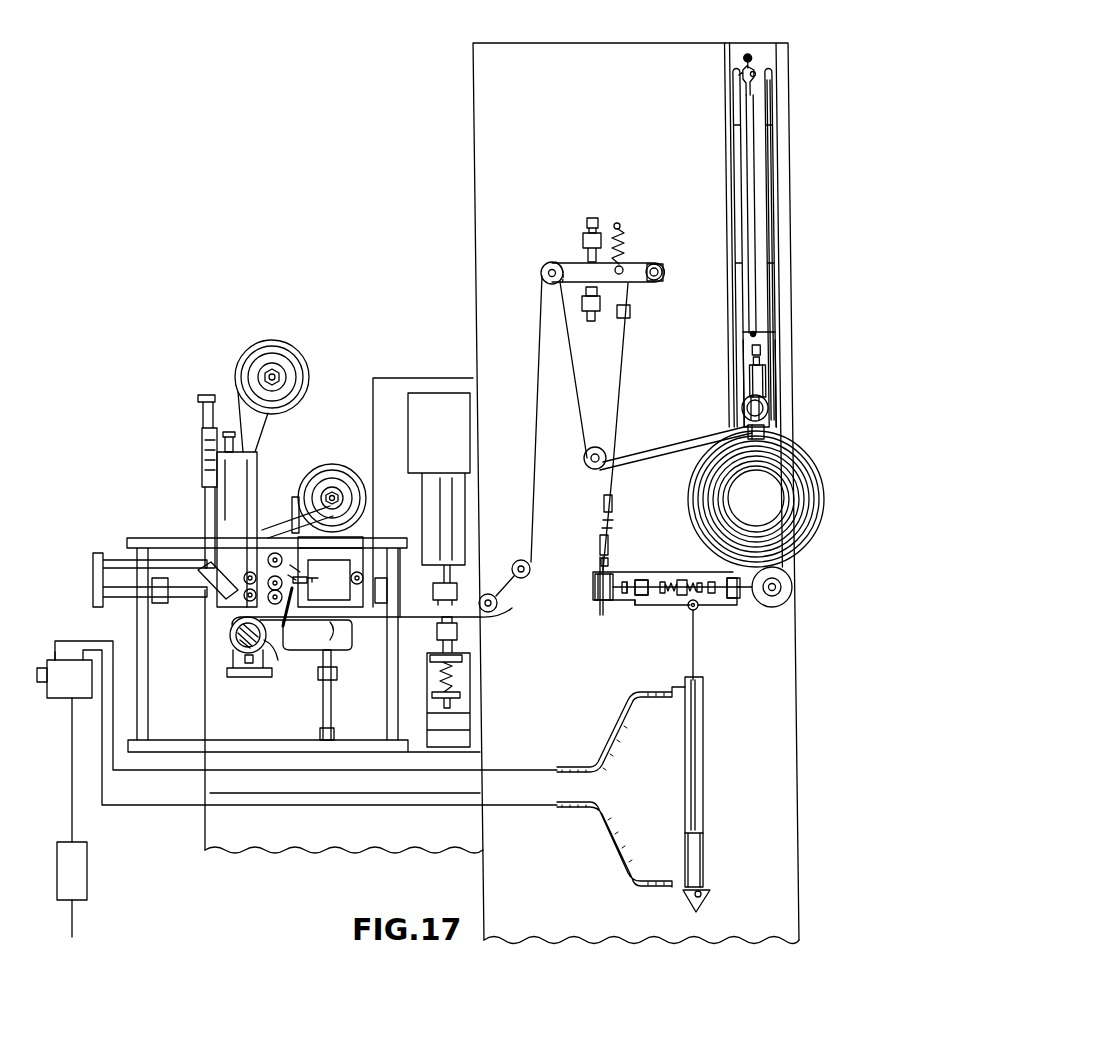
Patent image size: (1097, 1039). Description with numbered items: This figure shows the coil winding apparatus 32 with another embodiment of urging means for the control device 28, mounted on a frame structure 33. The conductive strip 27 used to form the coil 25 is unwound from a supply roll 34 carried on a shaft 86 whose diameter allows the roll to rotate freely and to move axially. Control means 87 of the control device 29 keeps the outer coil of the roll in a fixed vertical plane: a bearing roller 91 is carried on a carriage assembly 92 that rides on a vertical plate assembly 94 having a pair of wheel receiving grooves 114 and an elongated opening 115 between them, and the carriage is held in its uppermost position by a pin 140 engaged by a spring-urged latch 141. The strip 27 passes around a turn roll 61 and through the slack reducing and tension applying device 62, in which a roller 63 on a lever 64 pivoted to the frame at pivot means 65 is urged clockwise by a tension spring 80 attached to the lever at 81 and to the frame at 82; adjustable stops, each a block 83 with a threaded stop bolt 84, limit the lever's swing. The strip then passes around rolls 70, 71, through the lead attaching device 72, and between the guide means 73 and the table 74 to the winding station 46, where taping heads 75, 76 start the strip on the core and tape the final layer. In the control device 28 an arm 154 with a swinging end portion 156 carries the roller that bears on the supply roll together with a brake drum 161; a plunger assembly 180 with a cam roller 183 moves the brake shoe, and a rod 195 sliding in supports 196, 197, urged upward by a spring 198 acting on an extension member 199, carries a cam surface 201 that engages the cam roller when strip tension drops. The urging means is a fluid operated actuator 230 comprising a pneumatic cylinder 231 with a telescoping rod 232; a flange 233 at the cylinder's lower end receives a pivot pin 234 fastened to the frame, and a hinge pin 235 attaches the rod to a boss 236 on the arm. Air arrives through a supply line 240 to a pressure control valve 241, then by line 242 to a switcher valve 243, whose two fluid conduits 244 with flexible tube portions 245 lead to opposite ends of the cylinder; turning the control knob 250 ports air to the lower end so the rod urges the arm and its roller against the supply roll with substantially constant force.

The strip conductor coil construction 25 is at (278, 660).
The strip 27 is at (532, 523).
The control device 28 is at (645, 620).
The control device 29 is at (782, 358).
The coil winding apparatus 32 is at (136, 513).
The frame structure 33 is at (790, 818).
The supply roll 34 is at (808, 522).
The winding station 46 is at (222, 637).
The turn roll 61 is at (598, 450).
The slack reducing and tension applying device 62 is at (540, 270).
The roller 63 is at (552, 290).
The lever 64 is at (645, 283).
The pivot means 65 is at (666, 272).
The roll 70 is at (512, 560).
The roll 71 is at (497, 592).
The lead attaching device 72 is at (428, 622).
The combination guide means and bearing surface means 73 is at (330, 614).
The table 74 is at (342, 633).
The taping head means 75 is at (357, 550).
The taping head means 76 is at (222, 522).
The tension spring 80 is at (625, 241).
The spring attachment point on lever 81 is at (623, 268).
The spring attachment point on frame 82 is at (619, 223).
The block 83 is at (582, 239).
The threaded stop bolt 84 is at (586, 221).
The shaft 86 is at (778, 495).
The control means 87 is at (775, 437).
The bearing roller 91 is at (770, 409).
The carriage assembly 92 is at (773, 365).
The plate assembly 94 is at (771, 160).
The wheel receiving groove means 114 is at (732, 113).
The elongated opening 115 is at (757, 217).
The pin 140 is at (760, 330).
The latch 141 is at (745, 87).
The arm 154 is at (680, 575).
The swinging end portion 156 is at (757, 612).
The brake drum 161 is at (793, 580).
The plunger assembly 180 is at (688, 572).
The cam roller 183 is at (622, 606).
The rod 195 is at (620, 360).
The support 196 is at (631, 311).
The support 197 is at (594, 589).
The spring 198 is at (598, 562).
The extension member 199 is at (600, 492).
The cam surface 201 is at (597, 600).
The fluid operated actuator 230 is at (732, 703).
The pneumatic cylinder 231 is at (705, 773).
The telescoping rod 232 is at (699, 668).
The flange 233 is at (690, 908).
The pivot pin 234 is at (712, 896).
The hinge pin 235 is at (700, 606).
The boss 236 is at (690, 605).
The supply line 240 is at (72, 922).
The pressure control valve 241 is at (88, 878).
The line 242 is at (72, 815).
The switcher valve 243 is at (68, 685).
The fluid conduits 244 is at (504, 764).
The flexible tube portion 245 is at (618, 716).
The control knob 250 is at (46, 658).